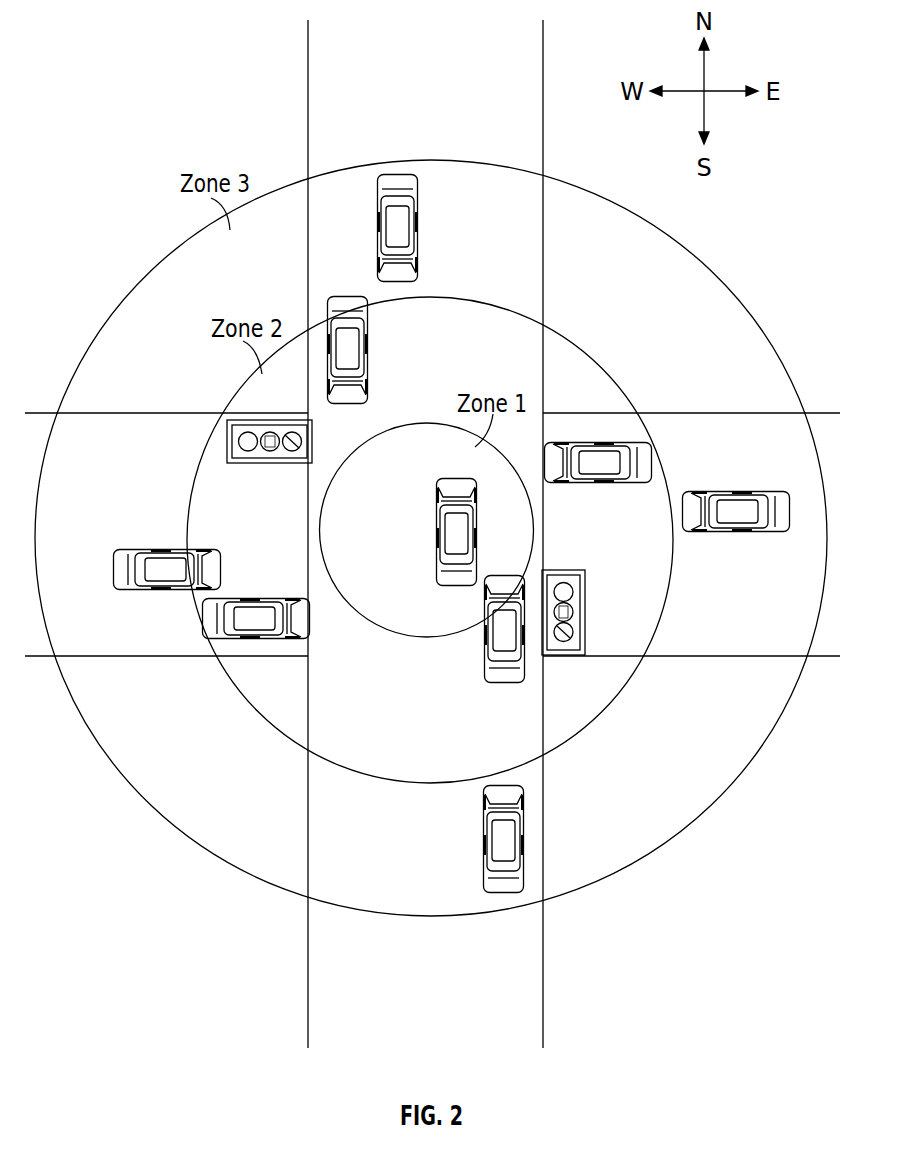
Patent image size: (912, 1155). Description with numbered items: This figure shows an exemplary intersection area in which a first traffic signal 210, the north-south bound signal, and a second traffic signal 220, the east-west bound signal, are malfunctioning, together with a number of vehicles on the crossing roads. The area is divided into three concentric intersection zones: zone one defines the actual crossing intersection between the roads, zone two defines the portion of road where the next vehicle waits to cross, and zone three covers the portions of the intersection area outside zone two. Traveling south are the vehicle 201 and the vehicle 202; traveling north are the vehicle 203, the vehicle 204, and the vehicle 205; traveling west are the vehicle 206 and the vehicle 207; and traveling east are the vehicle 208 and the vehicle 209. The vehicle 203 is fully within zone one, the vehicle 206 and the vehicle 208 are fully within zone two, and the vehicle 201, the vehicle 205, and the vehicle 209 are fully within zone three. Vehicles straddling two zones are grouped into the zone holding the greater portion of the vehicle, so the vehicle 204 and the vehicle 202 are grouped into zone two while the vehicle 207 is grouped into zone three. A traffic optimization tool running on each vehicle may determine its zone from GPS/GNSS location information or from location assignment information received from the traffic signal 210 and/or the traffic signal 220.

The vehicle 201 is at (398, 182).
The vehicle 202 is at (348, 302).
The vehicle 203 is at (453, 490).
The vehicle 204 is at (515, 580).
The vehicle 205 is at (507, 790).
The vehicle 206 is at (297, 612).
The vehicle 207 is at (160, 565).
The vehicle 208 is at (603, 458).
The vehicle 209 is at (747, 505).
The first traffic signal 210 is at (563, 569).
The second traffic signal 220 is at (228, 442).